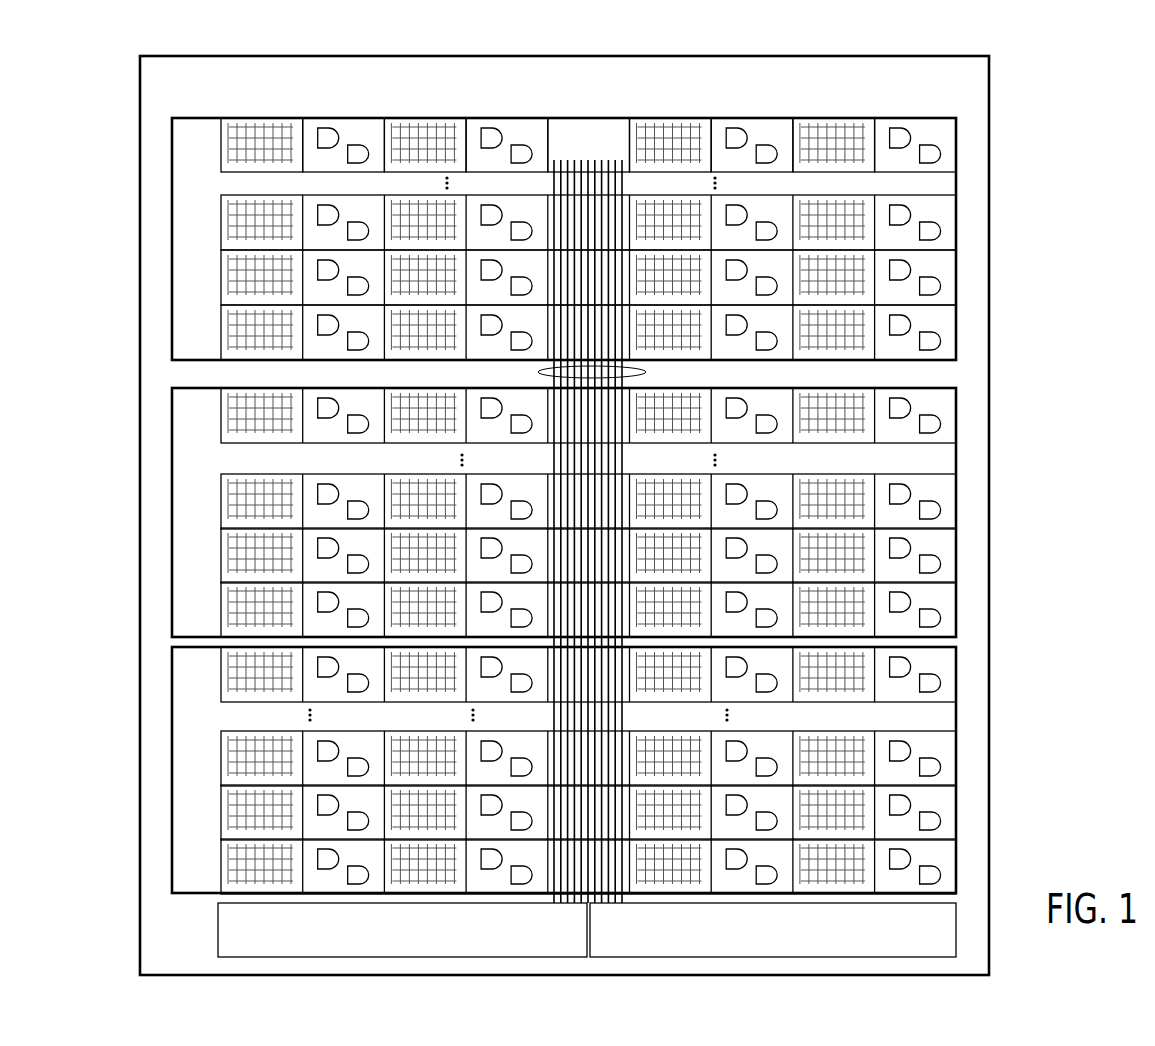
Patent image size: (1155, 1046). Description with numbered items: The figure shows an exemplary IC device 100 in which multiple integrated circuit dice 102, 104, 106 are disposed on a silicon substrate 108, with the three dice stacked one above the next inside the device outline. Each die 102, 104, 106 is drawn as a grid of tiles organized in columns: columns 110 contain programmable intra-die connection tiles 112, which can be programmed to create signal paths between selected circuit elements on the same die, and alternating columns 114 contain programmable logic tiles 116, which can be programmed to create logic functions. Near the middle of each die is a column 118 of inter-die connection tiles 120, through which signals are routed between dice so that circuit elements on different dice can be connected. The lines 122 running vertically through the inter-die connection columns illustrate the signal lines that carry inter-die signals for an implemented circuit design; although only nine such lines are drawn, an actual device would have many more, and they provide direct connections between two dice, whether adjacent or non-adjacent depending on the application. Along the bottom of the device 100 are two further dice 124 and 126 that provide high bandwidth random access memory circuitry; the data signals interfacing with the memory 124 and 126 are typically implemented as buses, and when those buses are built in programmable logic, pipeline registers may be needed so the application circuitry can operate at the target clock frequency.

The IC device 100 is at (140, 57).
The integrated circuit die 102 is at (212, 245).
The integrated circuit die 104 is at (212, 518).
The integrated circuit die 106 is at (212, 777).
The silicon substrate 108 is at (157, 376).
The column of programmable intra-die connection tiles 110 is at (546, 124).
The programmable intra-die connection tile 112 is at (222, 139).
The column of programmable logic tiles 114 is at (630, 124).
The programmable logic tile 116 is at (957, 145).
The column of inter-die connection tiles 118 is at (588, 124).
The inter-die connection tile 120 is at (553, 207).
The inter-die signal lines 122 is at (538, 372).
The memory die 124 is at (455, 937).
The memory die 126 is at (823, 937).